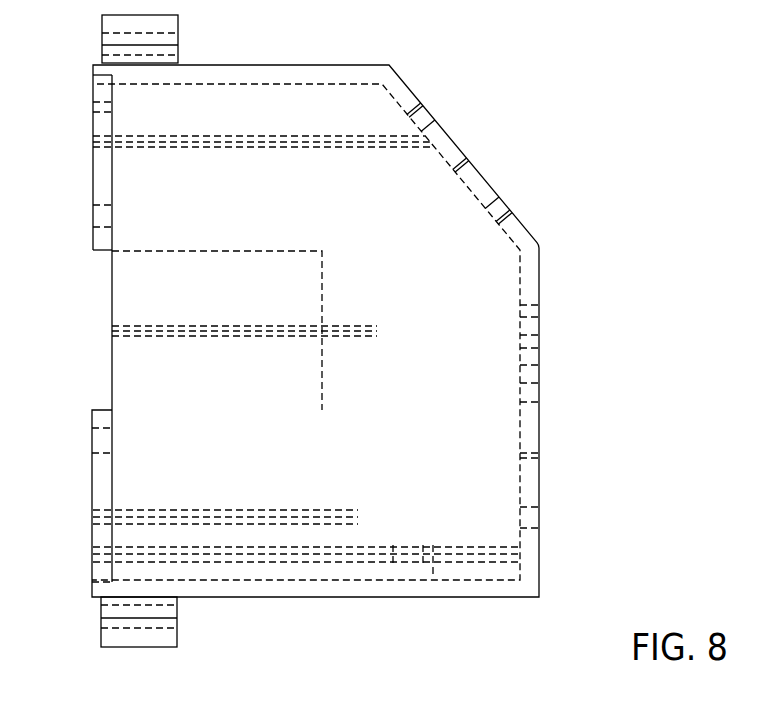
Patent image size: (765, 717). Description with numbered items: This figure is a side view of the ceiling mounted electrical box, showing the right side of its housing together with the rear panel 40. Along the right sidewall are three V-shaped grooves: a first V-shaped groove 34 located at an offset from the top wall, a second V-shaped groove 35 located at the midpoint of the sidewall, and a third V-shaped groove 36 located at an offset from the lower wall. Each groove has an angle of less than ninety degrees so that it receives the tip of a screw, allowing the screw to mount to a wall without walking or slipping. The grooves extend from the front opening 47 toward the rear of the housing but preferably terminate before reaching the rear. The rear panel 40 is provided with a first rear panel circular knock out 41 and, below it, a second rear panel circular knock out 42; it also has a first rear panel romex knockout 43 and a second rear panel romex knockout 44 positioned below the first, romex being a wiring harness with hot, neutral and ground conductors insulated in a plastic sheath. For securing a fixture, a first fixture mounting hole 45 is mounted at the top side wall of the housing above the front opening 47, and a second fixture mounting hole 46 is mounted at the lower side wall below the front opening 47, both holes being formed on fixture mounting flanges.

The first V-shaped groove 34 is at (207, 136).
The second V-shaped groove 35 is at (190, 328).
The third V-shaped groove 36 is at (183, 515).
The rear panel 40 is at (542, 189).
The first rear panel circular knock out 41 is at (421, 113).
The second rear panel circular knock out 42 is at (528, 433).
The first rear panel romex knockout 43 is at (507, 201).
The second rear panel romex knockout 44 is at (530, 517).
The first fixture mounting hole 45 is at (110, 36).
The second fixture mounting hole 46 is at (110, 624).
The front opening 47 is at (80, 160).